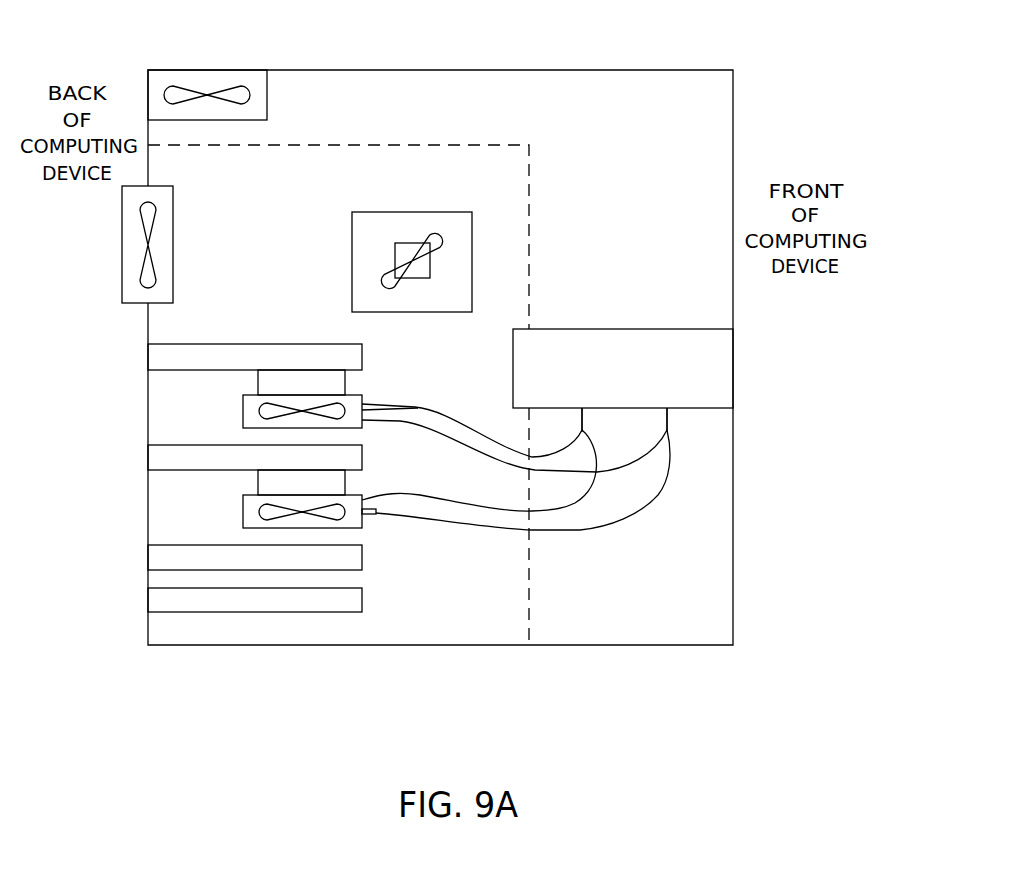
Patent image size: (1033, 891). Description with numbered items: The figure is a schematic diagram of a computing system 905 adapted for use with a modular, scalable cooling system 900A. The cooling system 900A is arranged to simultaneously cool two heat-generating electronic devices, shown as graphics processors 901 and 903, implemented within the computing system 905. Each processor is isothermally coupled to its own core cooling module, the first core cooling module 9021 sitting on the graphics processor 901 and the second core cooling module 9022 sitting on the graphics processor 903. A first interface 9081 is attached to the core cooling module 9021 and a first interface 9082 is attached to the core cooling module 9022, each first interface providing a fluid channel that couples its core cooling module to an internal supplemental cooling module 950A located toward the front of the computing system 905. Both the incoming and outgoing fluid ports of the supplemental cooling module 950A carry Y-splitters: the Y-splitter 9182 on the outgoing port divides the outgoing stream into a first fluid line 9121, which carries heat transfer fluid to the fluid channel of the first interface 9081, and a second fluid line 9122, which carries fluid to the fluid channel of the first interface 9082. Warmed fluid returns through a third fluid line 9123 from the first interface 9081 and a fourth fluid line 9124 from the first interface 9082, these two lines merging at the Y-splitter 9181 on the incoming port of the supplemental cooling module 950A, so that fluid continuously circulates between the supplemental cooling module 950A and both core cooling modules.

The computing system 905 is at (616, 69).
The cooling system 900A is at (443, 608).
The graphics processor 901 is at (286, 387).
The graphics processor 903 is at (277, 481).
The core cooling module 9021 is at (355, 394).
The core cooling module 9022 is at (355, 494).
The first interface 9081 is at (415, 407).
The first interface 9082 is at (376, 514).
The first fluid line 9121 is at (414, 423).
The second fluid line 9122 is at (503, 530).
The third fluid line 9123 is at (485, 445).
The fourth fluid line 9124 is at (573, 503).
The Y-splitter 9181 is at (589, 423).
The Y-splitter 9182 is at (667, 430).
The internal supplemental cooling module 950A is at (655, 363).